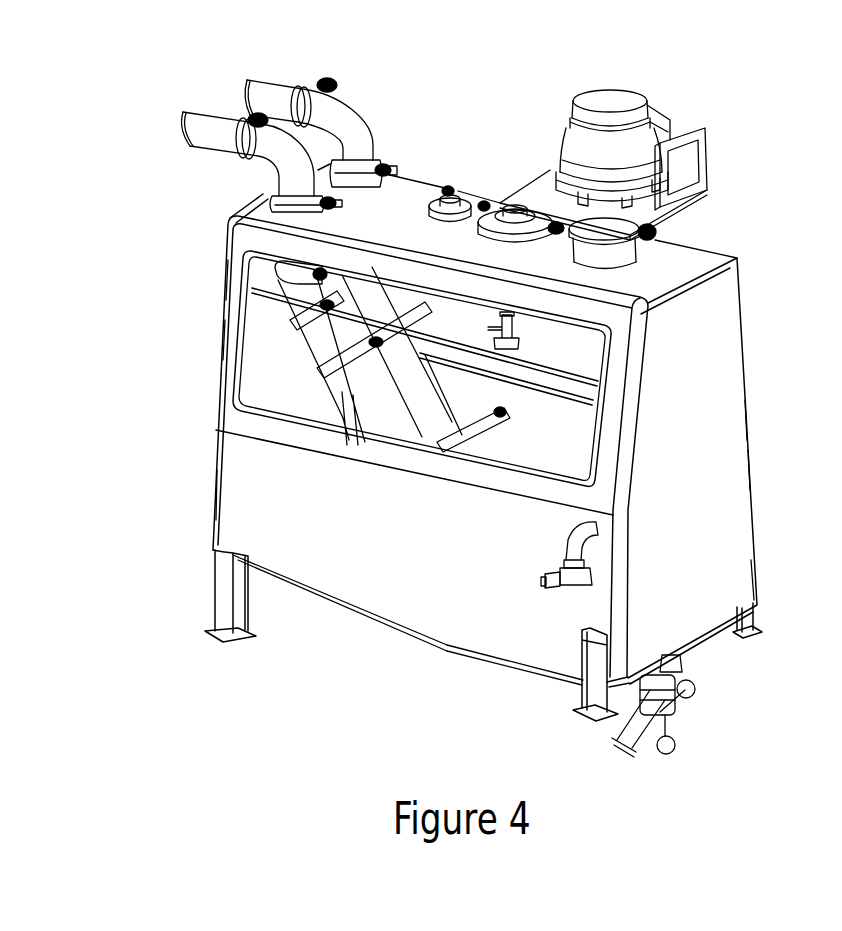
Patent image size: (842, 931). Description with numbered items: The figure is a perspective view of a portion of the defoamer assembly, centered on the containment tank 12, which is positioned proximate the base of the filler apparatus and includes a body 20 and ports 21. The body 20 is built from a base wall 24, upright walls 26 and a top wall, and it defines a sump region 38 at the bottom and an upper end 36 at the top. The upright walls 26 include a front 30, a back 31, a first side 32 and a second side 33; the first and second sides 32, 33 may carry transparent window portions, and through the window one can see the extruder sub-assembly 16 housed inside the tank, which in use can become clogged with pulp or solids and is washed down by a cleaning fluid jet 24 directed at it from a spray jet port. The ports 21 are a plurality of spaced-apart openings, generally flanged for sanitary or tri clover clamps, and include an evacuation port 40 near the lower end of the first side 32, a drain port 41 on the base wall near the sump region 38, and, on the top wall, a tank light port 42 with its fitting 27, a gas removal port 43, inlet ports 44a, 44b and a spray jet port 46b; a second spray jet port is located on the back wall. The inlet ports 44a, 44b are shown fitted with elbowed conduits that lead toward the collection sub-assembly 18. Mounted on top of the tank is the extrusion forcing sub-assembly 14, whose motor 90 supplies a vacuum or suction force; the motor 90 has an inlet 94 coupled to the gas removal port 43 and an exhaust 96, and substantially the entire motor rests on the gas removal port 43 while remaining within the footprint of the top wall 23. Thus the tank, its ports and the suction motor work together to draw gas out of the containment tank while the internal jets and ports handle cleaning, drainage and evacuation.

The containment tank 12 is at (773, 316).
The extrusion forcing sub-assembly 14 is at (617, 153).
The extruder sub-assembly 16 is at (294, 376).
The collection sub-assembly 18 is at (283, 114).
The body 20 is at (740, 472).
The ports 21 is at (667, 233).
The top wall 23 is at (431, 185).
The base wall 24 is at (521, 319).
The upright walls 26 is at (257, 518).
The fitting nub 27 is at (445, 184).
The front 30 is at (728, 427).
The back 31 is at (217, 353).
The first side 32 is at (372, 590).
The second side 33 is at (589, 384).
The upper end 36 is at (170, 297).
The sump region 38 is at (769, 584).
The evacuation port 40 is at (596, 528).
The drain port 41 is at (686, 657).
The tank light port 42 is at (452, 196).
The gas removal port 43 is at (630, 267).
The inlet port 44a is at (272, 204).
The inlet port 44b is at (369, 159).
The spray jet port 46b is at (490, 204).
The motor 90 is at (658, 100).
The inlet 94 is at (622, 237).
The exhaust 96 is at (665, 123).